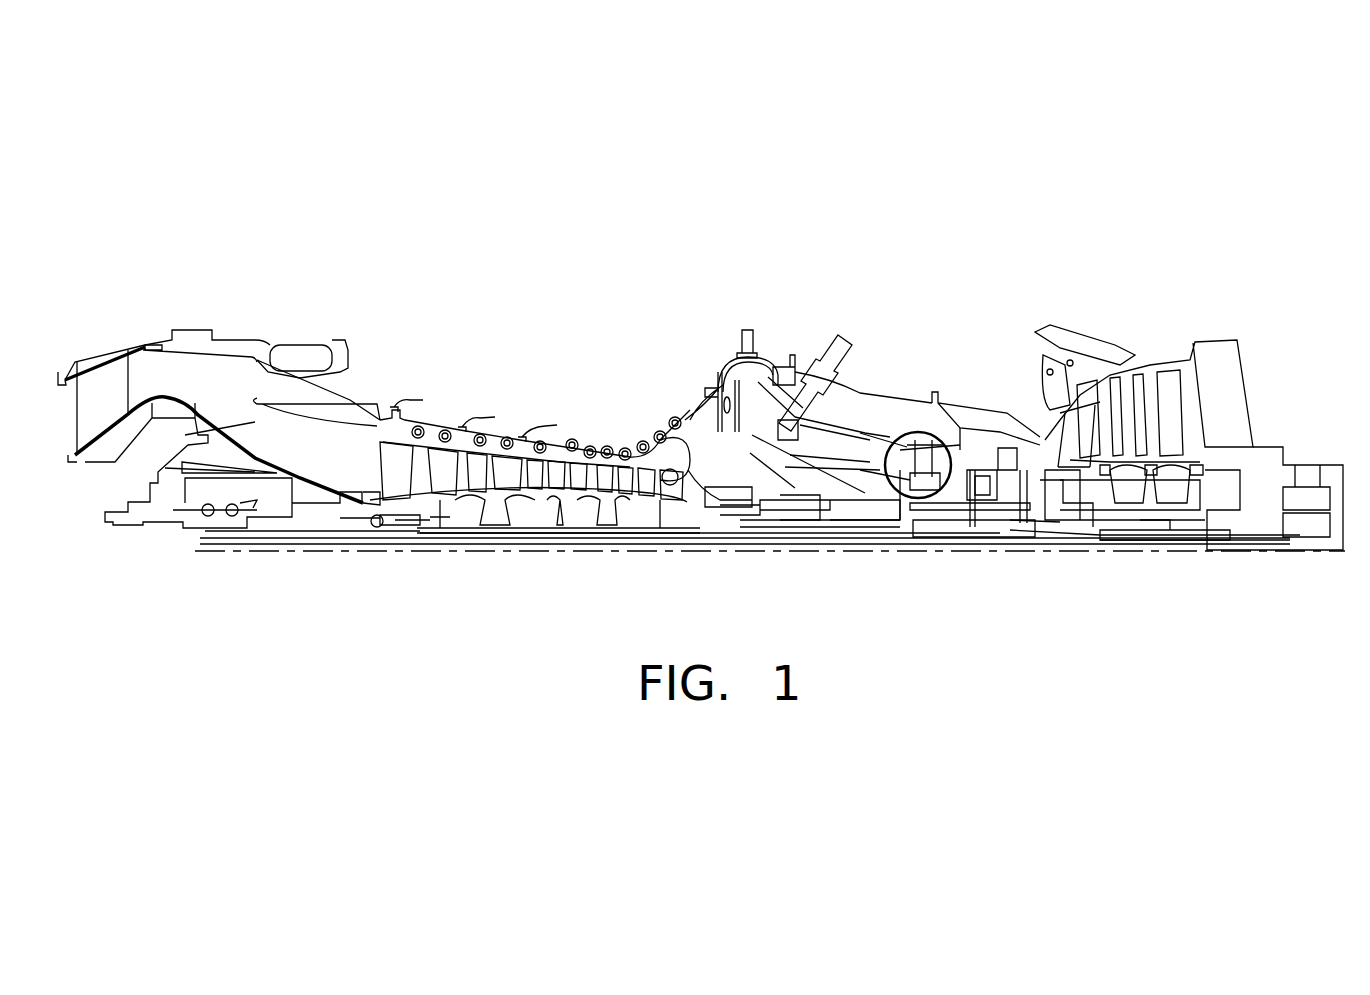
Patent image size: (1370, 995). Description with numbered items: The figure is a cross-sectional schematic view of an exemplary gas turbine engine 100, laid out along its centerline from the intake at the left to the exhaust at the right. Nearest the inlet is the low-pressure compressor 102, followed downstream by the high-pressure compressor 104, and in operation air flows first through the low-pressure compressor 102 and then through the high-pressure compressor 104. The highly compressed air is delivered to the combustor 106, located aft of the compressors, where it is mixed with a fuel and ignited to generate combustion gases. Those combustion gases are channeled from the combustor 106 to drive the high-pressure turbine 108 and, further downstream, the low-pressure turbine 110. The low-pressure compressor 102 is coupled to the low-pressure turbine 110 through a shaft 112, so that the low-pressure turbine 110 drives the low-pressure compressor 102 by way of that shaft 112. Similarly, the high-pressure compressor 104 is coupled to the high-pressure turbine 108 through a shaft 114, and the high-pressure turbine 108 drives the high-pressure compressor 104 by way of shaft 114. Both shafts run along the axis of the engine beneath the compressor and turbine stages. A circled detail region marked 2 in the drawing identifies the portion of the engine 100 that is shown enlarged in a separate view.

The gas turbine engine 100 is at (797, 108).
The low-pressure compressor 102 is at (403, 287).
The high-pressure compressor 104 is at (617, 352).
The combustor 106 is at (903, 283).
The high-pressure turbine 108 is at (992, 323).
The low-pressure turbine 110 is at (1215, 268).
The shaft 112 is at (1127, 537).
The shaft 114 is at (405, 532).
The detail region of FIG. 2 is at (885, 432).